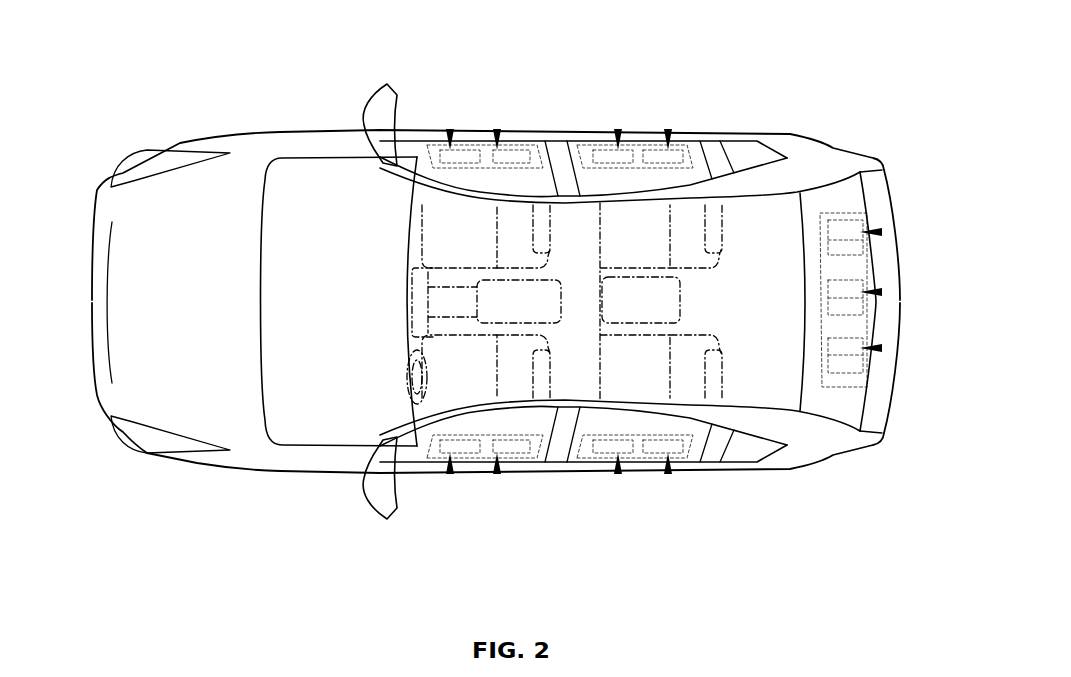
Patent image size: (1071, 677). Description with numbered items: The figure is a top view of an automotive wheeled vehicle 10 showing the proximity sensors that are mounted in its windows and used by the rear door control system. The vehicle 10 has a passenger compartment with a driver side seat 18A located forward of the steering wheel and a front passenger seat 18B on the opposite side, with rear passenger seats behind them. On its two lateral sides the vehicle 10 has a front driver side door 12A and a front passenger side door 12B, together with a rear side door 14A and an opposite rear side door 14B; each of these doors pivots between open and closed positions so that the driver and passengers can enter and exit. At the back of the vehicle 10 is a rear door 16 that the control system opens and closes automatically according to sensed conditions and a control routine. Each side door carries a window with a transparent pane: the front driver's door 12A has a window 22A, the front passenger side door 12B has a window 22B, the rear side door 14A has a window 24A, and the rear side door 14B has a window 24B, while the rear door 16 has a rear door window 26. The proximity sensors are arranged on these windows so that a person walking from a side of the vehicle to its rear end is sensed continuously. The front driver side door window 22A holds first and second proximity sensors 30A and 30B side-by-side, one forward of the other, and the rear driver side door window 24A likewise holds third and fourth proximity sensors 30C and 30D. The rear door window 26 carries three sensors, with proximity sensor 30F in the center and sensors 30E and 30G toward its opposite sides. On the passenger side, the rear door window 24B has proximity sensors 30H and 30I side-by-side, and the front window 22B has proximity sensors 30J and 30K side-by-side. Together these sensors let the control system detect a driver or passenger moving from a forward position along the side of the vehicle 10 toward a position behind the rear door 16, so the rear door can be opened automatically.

The automotive wheeled vehicle 10 is at (146, 122).
The front driver side door 12A is at (523, 462).
The front passenger side door 12B is at (518, 137).
The rear side door 14A is at (687, 462).
The rear side door 14B is at (688, 137).
The rear door 16 is at (880, 198).
The driver side seat 18A is at (445, 372).
The front passenger seat 18B is at (445, 232).
The window 22A is at (497, 422).
The window 22B is at (493, 182).
The window 24A is at (637, 422).
The window 24B is at (636, 177).
The rear door window 26 is at (840, 193).
The proximity sensor 30A is at (450, 474).
The proximity sensor 30B is at (497, 474).
The proximity sensor 30C is at (618, 474).
The proximity sensor 30D is at (668, 474).
The proximity sensor 30E is at (882, 348).
The proximity sensor 30F is at (882, 292).
The proximity sensor 30G is at (882, 232).
The proximity sensor 30H is at (668, 128).
The proximity sensor 30I is at (618, 128).
The proximity sensor 30J is at (497, 128).
The proximity sensor 30K is at (449, 128).